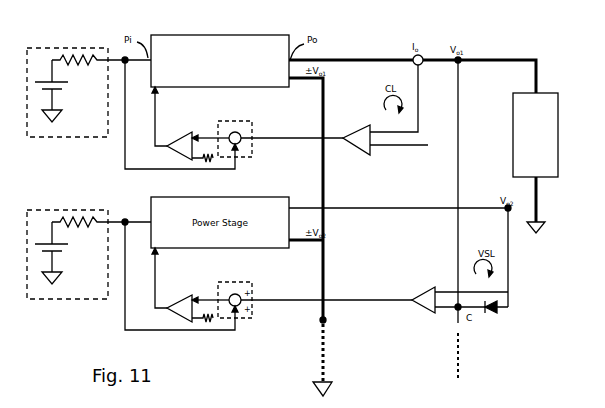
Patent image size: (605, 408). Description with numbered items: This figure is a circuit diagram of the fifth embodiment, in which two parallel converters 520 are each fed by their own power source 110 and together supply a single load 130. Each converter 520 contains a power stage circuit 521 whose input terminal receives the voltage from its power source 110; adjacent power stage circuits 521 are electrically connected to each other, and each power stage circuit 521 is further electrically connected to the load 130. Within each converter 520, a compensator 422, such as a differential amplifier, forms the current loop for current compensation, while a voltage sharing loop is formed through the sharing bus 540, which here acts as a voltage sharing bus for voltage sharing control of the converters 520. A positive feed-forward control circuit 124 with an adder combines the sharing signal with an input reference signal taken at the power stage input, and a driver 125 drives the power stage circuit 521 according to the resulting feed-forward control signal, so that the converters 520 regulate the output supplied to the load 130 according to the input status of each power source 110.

The power source 110 is at (58, 137).
The power stage circuit 521 is at (236, 33).
The converter 520 is at (362, 41).
The compensator 422 is at (363, 125).
The driver 125 is at (180, 131).
The positive feed-forward control circuit 124 is at (245, 159).
The load 130 is at (547, 92).
The sharing bus 540 is at (458, 172).